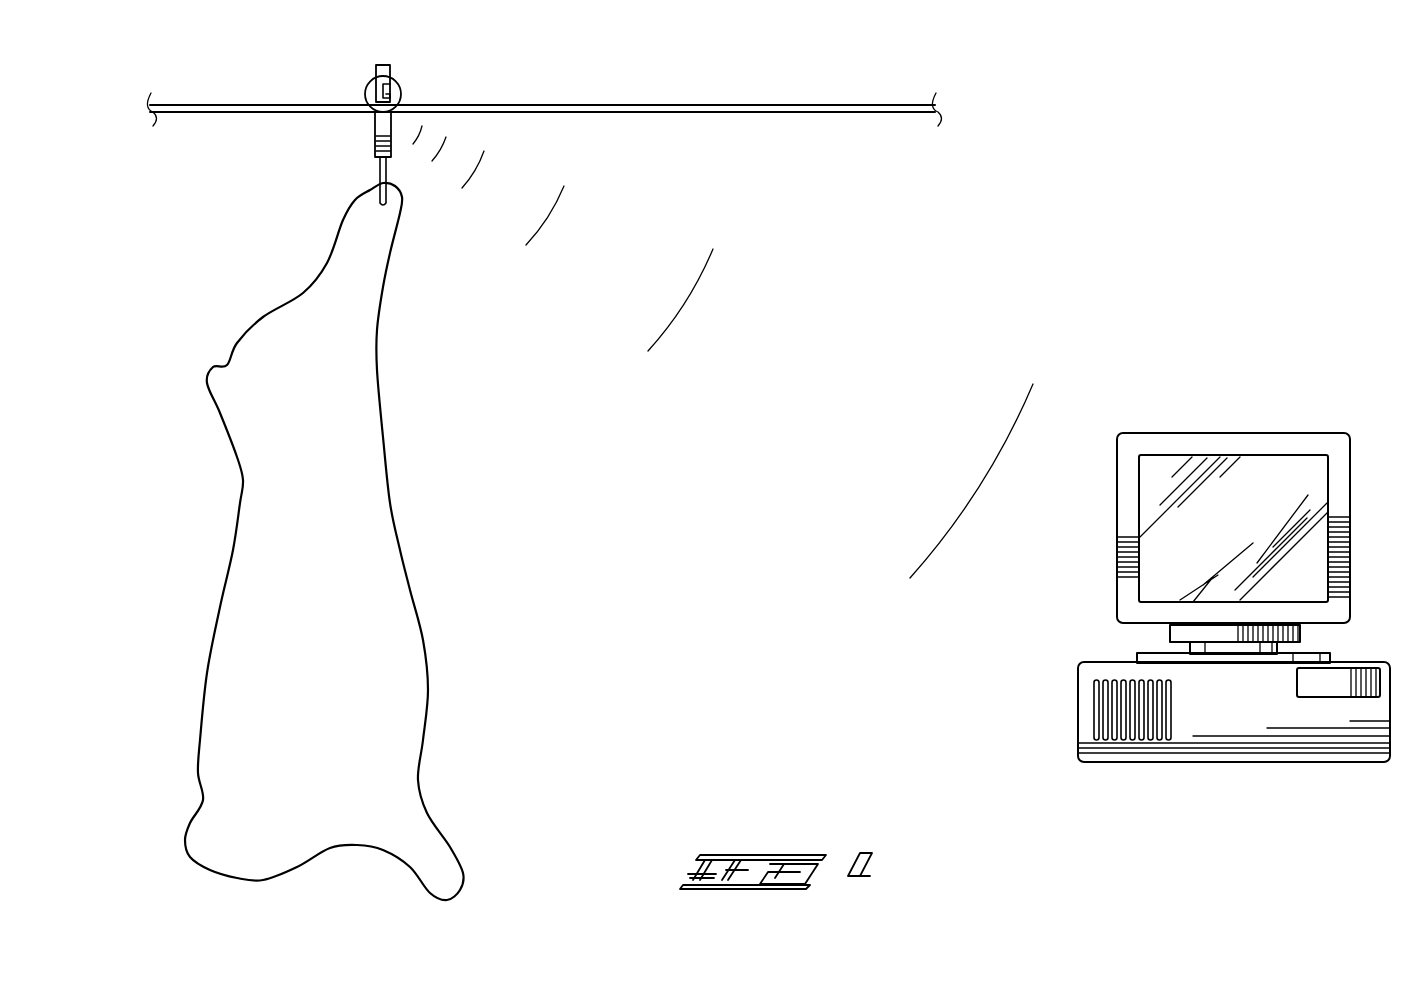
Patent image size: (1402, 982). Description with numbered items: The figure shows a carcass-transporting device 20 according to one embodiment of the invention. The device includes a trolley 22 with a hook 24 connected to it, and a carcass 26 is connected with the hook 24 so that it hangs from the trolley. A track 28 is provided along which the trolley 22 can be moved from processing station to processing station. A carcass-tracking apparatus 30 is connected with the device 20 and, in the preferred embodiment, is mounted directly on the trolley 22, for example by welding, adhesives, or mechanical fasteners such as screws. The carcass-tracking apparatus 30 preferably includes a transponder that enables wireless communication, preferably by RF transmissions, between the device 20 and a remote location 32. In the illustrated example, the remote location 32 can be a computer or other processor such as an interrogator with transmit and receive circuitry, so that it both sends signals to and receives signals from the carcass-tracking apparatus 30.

The carcass-transporting device 20 is at (260, 57).
The trolley 22 is at (382, 65).
The hook 24 is at (378, 172).
The carcass 26 is at (370, 633).
The track 28 is at (753, 113).
The carcass-tracking apparatus 30 is at (401, 88).
The remote location 32 is at (1276, 357).